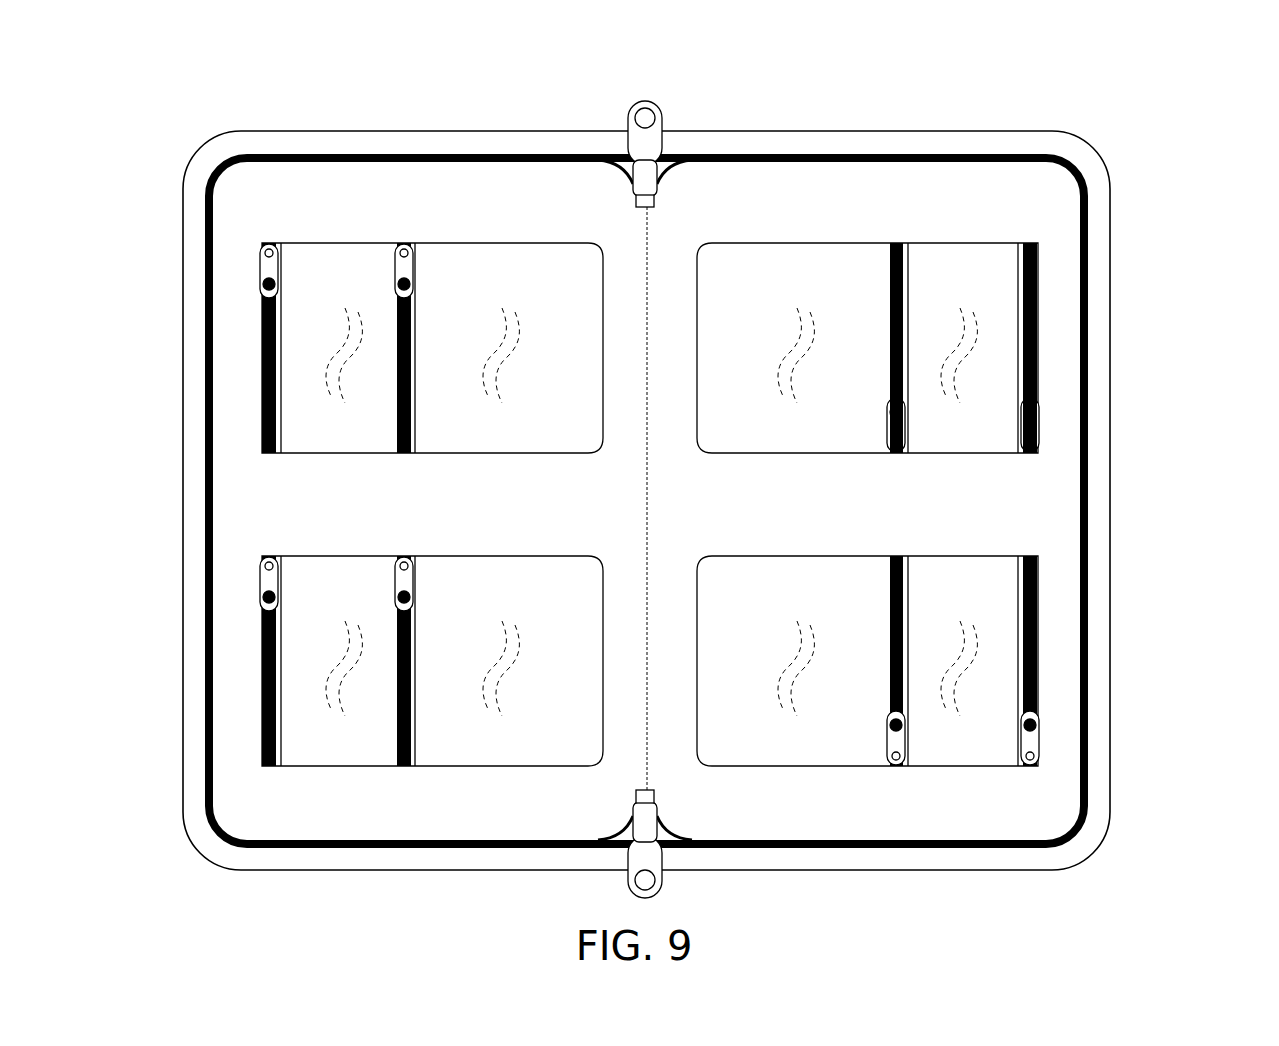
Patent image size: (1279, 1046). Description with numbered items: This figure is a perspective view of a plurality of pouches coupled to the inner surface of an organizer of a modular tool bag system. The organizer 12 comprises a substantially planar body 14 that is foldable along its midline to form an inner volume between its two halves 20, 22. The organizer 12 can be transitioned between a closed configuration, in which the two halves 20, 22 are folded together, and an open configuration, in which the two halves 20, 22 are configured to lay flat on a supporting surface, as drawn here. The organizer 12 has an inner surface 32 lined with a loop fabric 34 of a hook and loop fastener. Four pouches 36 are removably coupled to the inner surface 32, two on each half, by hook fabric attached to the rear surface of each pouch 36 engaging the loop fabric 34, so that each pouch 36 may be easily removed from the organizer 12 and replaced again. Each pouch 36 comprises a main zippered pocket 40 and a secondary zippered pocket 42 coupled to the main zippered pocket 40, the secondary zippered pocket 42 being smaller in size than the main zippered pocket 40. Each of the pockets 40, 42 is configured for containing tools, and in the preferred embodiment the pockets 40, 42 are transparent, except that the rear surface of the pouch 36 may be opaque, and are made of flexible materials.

The organizer 12 is at (1117, 118).
The substantially planar body 14 is at (697, 187).
The half 20 is at (390, 808).
The half 22 is at (963, 783).
The inner surface 32 is at (253, 503).
The loop fabric 34 is at (1038, 796).
The pouch 36 is at (466, 183).
The main zippered pocket 40 is at (996, 430).
The secondary zippered pocket 42 is at (800, 422).